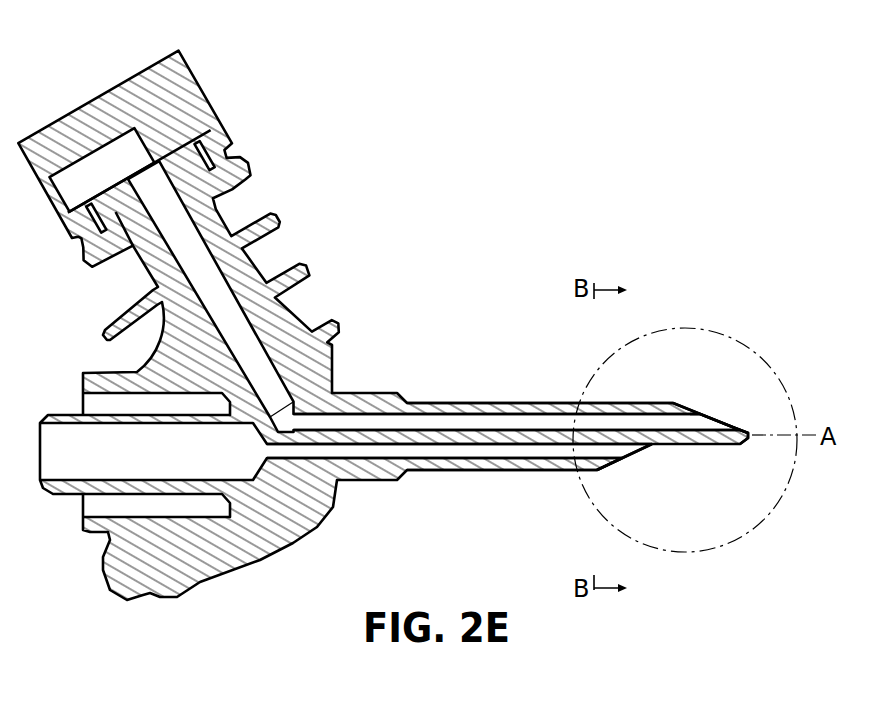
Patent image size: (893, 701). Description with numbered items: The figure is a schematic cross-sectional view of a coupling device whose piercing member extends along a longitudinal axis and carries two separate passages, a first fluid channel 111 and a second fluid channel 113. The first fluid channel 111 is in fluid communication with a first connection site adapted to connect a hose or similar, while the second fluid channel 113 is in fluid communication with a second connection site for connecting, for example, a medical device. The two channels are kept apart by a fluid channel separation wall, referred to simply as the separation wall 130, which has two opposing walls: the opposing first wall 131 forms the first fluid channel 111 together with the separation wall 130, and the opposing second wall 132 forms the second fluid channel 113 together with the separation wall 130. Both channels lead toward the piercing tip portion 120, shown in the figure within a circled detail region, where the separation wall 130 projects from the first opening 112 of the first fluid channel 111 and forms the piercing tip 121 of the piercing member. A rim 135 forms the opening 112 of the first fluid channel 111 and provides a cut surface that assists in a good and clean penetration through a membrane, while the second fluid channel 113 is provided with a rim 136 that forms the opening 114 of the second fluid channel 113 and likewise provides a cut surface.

The separation wall 130 is at (450, 443).
The opposing second wall 132 is at (458, 403).
The opposing first wall 131 is at (443, 470).
The second fluid channel 113 is at (510, 414).
The first fluid channel 111 is at (497, 452).
The first opening of the second fluid channel 114 is at (705, 413).
The rim 135 is at (713, 418).
The rim 136 is at (640, 447).
The piercing tip 121 is at (747, 436).
The first opening of the first fluid channel 112 is at (625, 455).
The piercing tip portion 120 is at (660, 364).